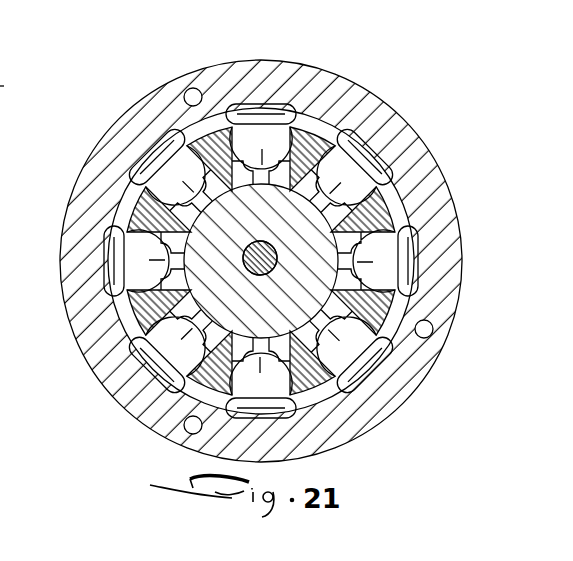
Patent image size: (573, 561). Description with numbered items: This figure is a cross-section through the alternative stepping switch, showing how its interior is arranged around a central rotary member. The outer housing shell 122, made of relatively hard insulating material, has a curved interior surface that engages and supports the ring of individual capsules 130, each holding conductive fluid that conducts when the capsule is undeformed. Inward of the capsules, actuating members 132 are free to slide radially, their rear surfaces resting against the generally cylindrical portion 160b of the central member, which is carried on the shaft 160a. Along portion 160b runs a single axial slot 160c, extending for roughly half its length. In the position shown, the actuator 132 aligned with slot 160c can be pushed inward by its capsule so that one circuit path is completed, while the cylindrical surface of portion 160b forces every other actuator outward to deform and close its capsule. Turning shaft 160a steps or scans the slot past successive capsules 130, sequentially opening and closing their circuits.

The outer housing shell 122 is at (378, 108).
The capsule 130 is at (266, 103).
The actuating member 132 is at (128, 318).
The shaft 160a is at (274, 251).
The portion 160b is at (303, 336).
The slot 160c is at (194, 261).